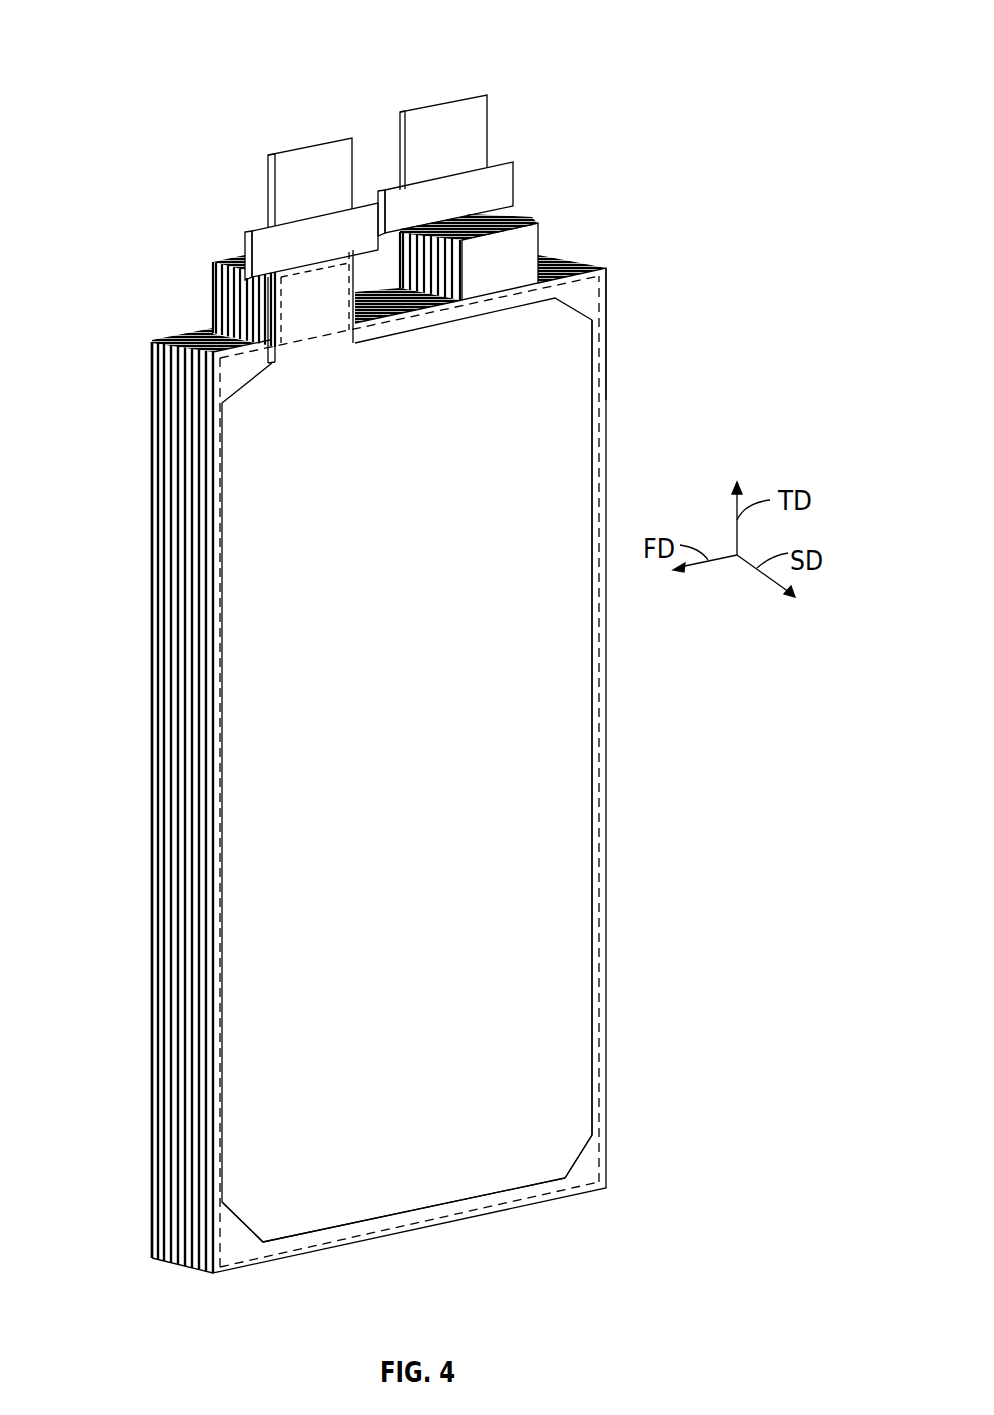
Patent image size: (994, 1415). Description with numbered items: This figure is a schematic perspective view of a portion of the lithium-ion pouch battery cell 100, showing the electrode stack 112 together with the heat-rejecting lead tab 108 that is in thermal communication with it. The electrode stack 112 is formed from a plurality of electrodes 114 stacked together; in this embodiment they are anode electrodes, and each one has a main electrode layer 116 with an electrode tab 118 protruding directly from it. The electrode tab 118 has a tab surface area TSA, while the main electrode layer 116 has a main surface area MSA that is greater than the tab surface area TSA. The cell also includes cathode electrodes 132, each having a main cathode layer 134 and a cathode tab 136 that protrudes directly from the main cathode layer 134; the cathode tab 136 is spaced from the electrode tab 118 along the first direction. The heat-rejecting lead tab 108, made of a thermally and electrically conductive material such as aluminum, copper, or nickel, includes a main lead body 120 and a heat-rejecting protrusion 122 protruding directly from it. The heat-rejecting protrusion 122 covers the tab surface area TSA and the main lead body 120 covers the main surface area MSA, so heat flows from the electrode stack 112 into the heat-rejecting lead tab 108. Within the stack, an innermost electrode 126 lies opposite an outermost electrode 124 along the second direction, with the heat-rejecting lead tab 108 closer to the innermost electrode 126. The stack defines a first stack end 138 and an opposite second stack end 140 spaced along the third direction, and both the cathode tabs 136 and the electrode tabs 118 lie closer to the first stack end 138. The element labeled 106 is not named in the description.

The lithium-ion battery cell 100 is at (682, 1027).
The first electrode tab 106 is at (484, 122).
The heat-rejecting lead tab 108 is at (576, 792).
The electrode stack 112 is at (712, 40).
The electrodes 114 is at (168, 667).
The main electrode layer 116 is at (164, 558).
The electrode tab 118 is at (215, 300).
The main lead body 120 is at (576, 1078).
The heat-rejecting protrusion 122 is at (330, 166).
The outermost electrode 124 is at (150, 803).
The innermost electrode 126 is at (252, 1250).
The cathode electrodes 132 is at (568, 260).
The main cathode layer 134 is at (594, 270).
The cathode tab 136 is at (534, 224).
The first stack end 138 is at (173, 340).
The second stack end 140 is at (541, 1207).
The tab surface area TSA is at (265, 298).
The main surface area MSA is at (212, 1045).